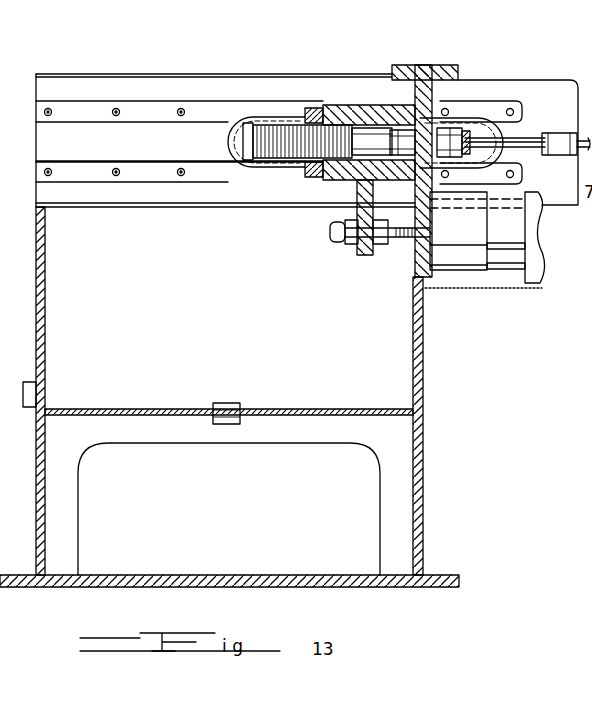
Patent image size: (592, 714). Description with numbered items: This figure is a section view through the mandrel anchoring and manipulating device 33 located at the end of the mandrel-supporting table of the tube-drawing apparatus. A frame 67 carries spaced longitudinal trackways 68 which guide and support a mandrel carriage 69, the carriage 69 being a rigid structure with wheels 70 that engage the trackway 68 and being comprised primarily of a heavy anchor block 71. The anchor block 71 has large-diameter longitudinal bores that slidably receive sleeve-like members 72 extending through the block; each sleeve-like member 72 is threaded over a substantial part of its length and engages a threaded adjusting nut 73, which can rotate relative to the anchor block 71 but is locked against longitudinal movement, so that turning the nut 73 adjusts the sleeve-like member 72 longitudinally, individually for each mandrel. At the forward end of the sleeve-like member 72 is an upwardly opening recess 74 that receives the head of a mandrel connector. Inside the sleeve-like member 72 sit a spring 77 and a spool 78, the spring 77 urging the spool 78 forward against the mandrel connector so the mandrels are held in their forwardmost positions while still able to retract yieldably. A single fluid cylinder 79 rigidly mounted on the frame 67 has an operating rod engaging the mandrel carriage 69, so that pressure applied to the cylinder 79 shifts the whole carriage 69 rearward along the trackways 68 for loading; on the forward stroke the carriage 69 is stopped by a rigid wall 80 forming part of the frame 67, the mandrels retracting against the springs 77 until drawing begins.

The mandrel anchoring and manipulating means 33 is at (236, 338).
The frame 67 is at (385, 364).
The trackway 68 is at (130, 118).
The mandrel carriage 69 is at (326, 97).
The wheel 70 is at (228, 150).
The anchor block 71 is at (361, 106).
The sleeve-like member 72 is at (283, 164).
The threaded adjusting nut 73 is at (300, 120).
The upwardly opening recess 74 is at (462, 132).
The spring 77 is at (386, 130).
The spool 78 is at (424, 142).
The fluid cylinder 79 is at (466, 250).
The rigid wall 80 is at (430, 124).